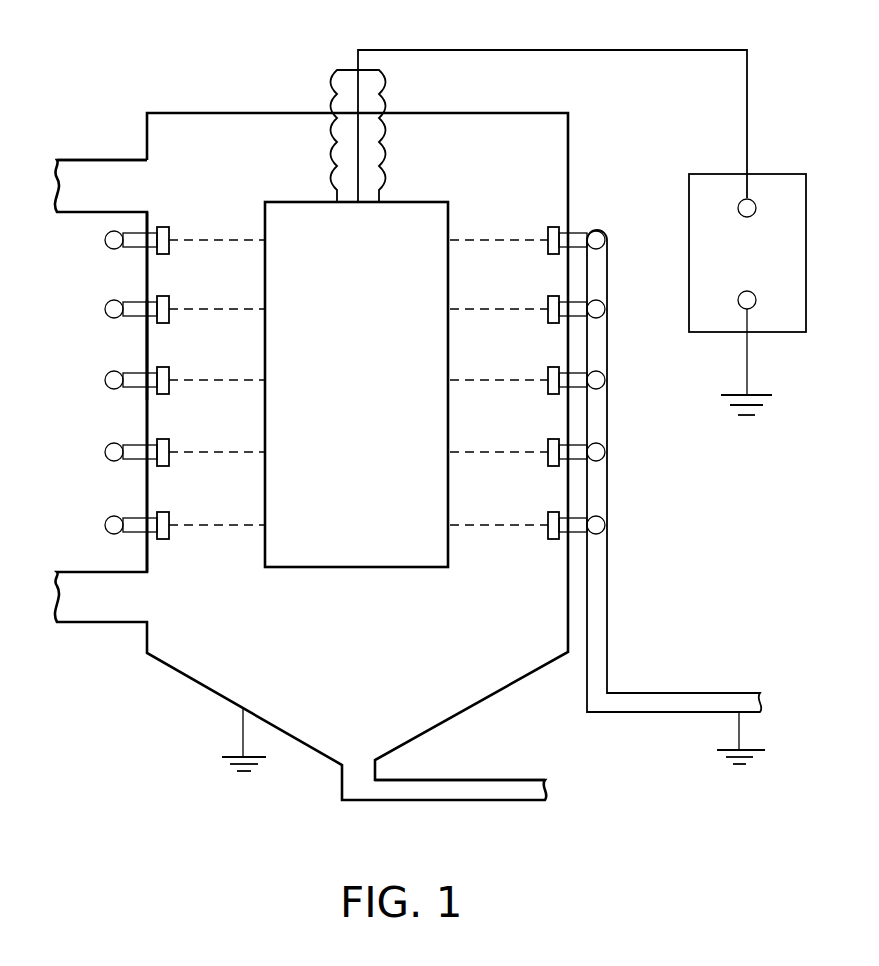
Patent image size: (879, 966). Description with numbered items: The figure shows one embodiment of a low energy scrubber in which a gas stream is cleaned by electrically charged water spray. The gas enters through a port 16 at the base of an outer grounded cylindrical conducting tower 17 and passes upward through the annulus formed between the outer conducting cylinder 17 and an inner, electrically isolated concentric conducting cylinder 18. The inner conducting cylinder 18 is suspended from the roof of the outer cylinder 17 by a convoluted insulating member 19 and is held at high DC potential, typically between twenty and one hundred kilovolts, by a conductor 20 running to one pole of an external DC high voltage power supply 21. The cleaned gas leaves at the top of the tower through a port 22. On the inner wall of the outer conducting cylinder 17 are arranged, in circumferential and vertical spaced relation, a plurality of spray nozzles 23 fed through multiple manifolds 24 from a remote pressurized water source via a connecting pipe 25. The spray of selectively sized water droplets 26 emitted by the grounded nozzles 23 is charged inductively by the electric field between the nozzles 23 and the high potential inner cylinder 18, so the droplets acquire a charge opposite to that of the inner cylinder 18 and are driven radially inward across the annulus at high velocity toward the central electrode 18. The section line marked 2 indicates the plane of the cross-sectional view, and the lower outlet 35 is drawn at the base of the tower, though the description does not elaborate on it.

The port 16 is at (105, 622).
The outer grounded cylindrical conducting tower 17 is at (147, 348).
The inner concentric conducting cylinder 18 is at (265, 358).
The convoluted insulating member 19 is at (385, 178).
The conductor 20 is at (357, 68).
The DC high voltage power supply 21 is at (700, 222).
The port 22 is at (68, 170).
The spray nozzle 23 is at (170, 230).
The manifold 24 is at (114, 246).
The connecting pipe 25 is at (672, 693).
The water droplets 26 is at (358, 382).
The outlet conduit 35 is at (440, 780).
The section line 2- 2 is at (137, 493).